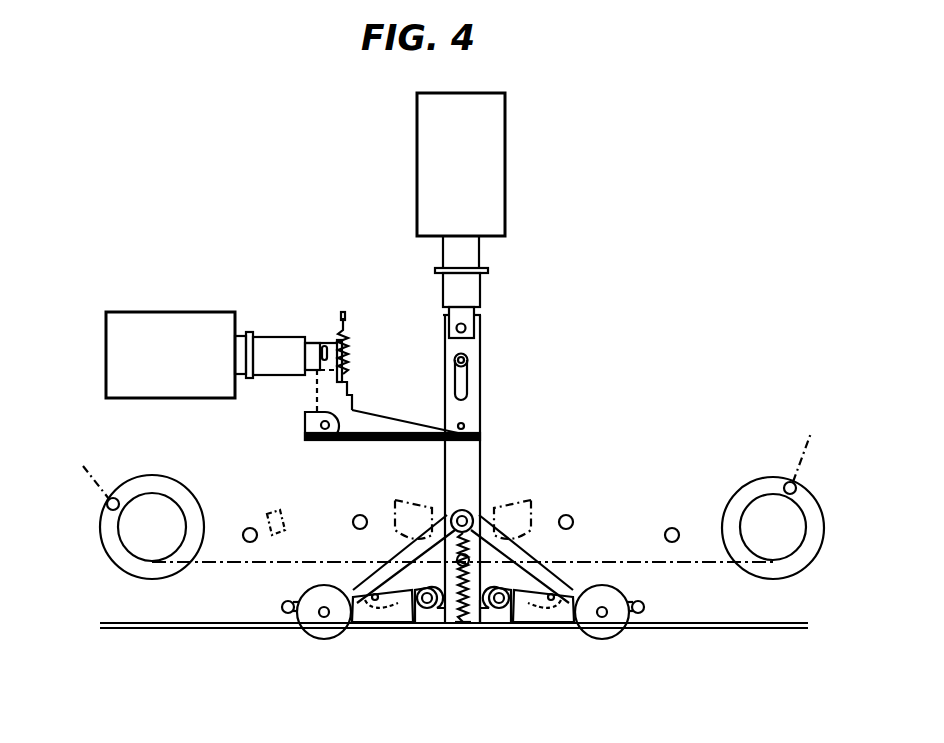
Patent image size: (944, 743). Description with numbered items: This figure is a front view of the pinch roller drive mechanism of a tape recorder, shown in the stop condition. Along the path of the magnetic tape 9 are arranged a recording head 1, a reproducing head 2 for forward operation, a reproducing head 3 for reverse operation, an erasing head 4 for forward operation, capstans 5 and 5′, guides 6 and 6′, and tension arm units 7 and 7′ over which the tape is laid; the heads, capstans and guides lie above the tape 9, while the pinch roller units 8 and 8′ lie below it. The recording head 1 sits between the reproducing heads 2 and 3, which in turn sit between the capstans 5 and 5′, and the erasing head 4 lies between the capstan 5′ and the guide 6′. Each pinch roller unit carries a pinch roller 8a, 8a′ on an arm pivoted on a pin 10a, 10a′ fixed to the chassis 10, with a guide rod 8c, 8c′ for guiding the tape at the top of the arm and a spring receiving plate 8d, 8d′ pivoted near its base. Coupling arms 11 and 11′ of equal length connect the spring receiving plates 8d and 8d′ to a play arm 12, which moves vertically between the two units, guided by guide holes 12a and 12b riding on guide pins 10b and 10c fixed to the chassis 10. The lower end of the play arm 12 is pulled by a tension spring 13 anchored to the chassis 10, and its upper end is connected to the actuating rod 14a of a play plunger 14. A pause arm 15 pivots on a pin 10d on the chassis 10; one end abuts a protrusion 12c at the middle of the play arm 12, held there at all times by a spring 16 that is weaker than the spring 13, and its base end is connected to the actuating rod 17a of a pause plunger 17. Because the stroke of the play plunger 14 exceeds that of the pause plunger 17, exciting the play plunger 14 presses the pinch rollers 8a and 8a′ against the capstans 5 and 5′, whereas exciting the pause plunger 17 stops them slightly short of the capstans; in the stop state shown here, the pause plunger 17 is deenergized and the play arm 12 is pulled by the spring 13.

The recording head 1 is at (463, 508).
The reproducing head for forward operation 2 is at (506, 498).
The reproducing head for reverse operation 3 is at (426, 498).
The erasing head for forward operation 4 is at (280, 512).
The capstan 5 is at (572, 518).
The capstan 5′ is at (357, 515).
The guide 6 is at (675, 528).
The guide 6′ is at (247, 528).
The tension arm unit 7 is at (765, 478).
The tension arm unit 7′ is at (152, 475).
The pinch roller unit 8 is at (626, 600).
The pinch roller unit 8′ is at (300, 600).
The pinch roller 8a is at (614, 630).
The pinch roller 8a′ is at (312, 630).
The guide rod 8c is at (644, 606).
The guide rod 8c′ is at (282, 606).
The spring receiving plate 8d is at (566, 627).
The spring receiving plate 8d′ is at (358, 627).
The magnetic tape 9 is at (704, 565).
The chassis 10 is at (750, 605).
The pin 10a is at (503, 612).
The pin 10a′ is at (422, 612).
The guide pin 10b is at (466, 356).
The guide pin 10c is at (492, 560).
The pin 10d is at (320, 425).
The coupling arm 11 is at (545, 580).
The coupling arm 11′ is at (402, 556).
The play arm 12 is at (475, 406).
The guide hole 12a is at (466, 380).
The guide hole 12b is at (479, 628).
The protrusion 12c is at (458, 424).
The spring 13 is at (458, 628).
The play plunger 14 is at (500, 143).
The actuating rod 14a is at (492, 254).
The pause arm 15 is at (368, 420).
The spring 16 is at (350, 357).
The pause plunger 17 is at (182, 318).
The actuating rod 17a is at (281, 345).